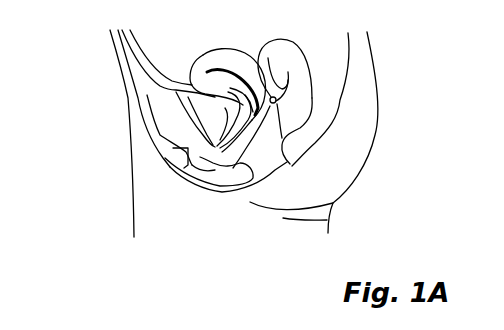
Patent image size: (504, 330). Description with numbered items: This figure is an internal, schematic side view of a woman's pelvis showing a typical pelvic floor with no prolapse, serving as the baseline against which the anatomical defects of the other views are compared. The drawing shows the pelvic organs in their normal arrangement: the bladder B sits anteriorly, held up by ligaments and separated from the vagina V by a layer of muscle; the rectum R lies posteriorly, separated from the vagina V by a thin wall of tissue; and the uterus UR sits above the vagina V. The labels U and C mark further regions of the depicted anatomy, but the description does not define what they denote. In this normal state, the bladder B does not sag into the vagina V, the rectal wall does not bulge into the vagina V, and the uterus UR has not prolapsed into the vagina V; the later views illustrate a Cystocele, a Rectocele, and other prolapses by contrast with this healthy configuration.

The uterus U is at (205, 55).
The bladder B is at (210, 110).
The uterus UR is at (190, 152).
The vagina V is at (210, 188).
The cervix C is at (276, 101).
The rectum R is at (289, 160).